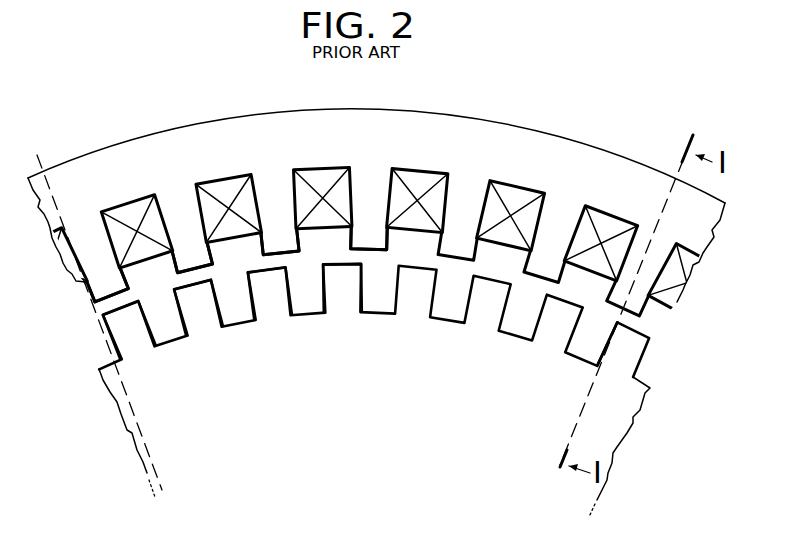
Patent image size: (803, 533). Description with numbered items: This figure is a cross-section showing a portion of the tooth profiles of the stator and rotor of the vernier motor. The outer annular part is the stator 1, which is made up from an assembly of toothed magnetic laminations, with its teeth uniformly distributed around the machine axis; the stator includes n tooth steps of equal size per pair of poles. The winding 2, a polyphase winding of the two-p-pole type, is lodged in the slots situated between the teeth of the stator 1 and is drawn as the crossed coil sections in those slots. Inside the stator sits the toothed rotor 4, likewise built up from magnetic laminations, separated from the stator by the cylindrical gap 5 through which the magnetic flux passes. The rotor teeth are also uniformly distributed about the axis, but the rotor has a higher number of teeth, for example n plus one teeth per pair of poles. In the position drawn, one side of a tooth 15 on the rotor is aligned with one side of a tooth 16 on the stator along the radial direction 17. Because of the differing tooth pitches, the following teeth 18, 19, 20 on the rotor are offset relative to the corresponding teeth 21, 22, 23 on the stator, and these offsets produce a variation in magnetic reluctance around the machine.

The stator 1 is at (570, 167).
The winding 2 is at (513, 200).
The rotor 4 is at (587, 432).
The gap 5 is at (630, 320).
The tooth 15 is at (122, 332).
The tooth 16 is at (98, 262).
The radial direction 17 is at (148, 452).
The tooth 18 is at (193, 304).
The tooth 19 is at (262, 298).
The tooth 20 is at (335, 283).
The tooth 21 is at (182, 227).
The tooth 22 is at (277, 210).
The tooth 23 is at (373, 200).